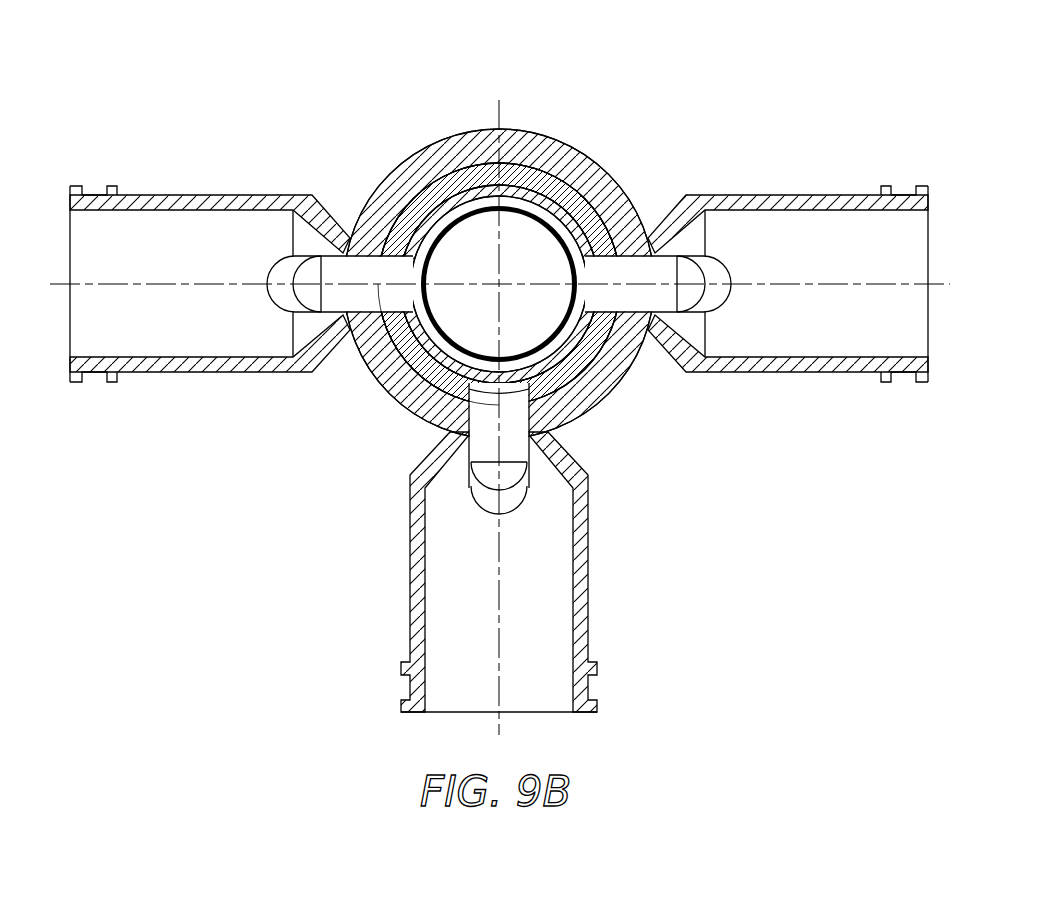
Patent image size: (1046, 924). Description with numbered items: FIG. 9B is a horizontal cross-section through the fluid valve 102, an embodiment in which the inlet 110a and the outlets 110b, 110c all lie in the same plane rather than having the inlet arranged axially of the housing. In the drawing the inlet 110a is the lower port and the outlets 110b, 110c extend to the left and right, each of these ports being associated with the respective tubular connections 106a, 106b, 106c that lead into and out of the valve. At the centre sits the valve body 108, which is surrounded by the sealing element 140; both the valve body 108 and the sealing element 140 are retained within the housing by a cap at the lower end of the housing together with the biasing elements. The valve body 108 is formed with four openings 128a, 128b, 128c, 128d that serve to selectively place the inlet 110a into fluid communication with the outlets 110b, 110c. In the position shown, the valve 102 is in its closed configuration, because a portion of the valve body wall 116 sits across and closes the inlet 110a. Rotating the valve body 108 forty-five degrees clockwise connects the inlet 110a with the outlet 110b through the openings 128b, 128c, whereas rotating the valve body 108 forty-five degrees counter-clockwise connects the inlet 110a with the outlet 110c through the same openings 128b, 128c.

The valve 102 is at (618, 70).
The first tubular conduit 106a is at (590, 583).
The second tubular conduit 106b is at (168, 372).
The third tubular conduit 106c is at (822, 372).
The valve body 108 is at (530, 197).
The inlet 110a is at (515, 443).
The outlet 110b is at (338, 270).
The valve body wall 116 is at (452, 412).
The opening 128a is at (410, 215).
The opening 128b is at (430, 348).
The opening 128c is at (568, 348).
The opening 128d is at (588, 215).
The sealing element 140 is at (467, 180).